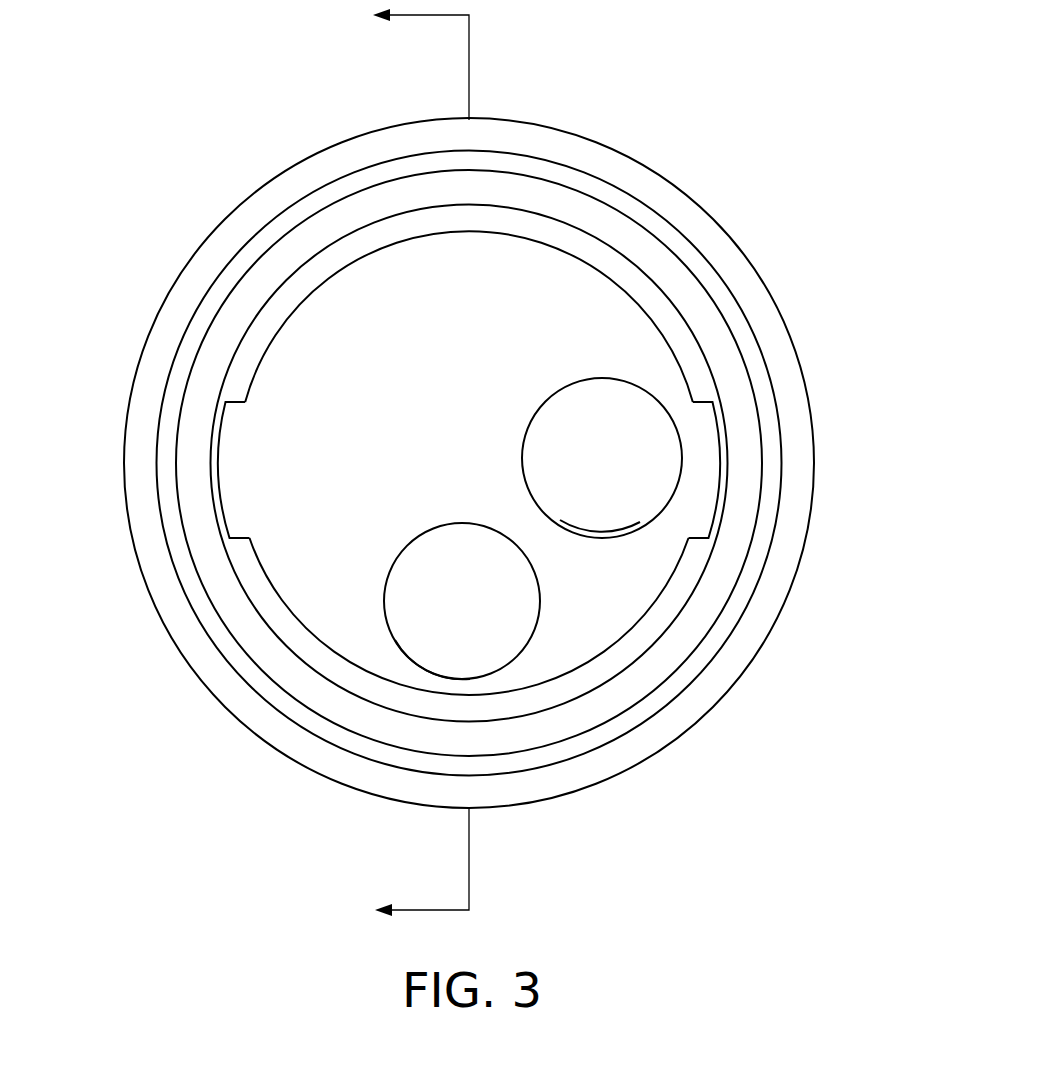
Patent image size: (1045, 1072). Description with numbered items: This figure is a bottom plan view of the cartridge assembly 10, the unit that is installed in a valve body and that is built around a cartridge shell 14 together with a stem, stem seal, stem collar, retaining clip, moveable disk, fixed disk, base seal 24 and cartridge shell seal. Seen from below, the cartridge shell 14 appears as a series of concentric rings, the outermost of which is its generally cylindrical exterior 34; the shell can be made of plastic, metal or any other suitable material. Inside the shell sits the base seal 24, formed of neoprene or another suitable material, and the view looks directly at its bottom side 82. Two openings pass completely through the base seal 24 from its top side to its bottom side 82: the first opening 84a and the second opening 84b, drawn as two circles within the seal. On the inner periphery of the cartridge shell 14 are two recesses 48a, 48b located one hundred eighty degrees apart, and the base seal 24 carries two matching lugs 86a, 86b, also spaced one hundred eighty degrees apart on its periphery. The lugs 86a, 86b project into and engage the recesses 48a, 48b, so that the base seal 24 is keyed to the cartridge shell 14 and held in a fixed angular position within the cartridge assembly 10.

The cartridge assembly 10 is at (193, 169).
The cartridge shell 14 is at (662, 172).
The base seal 24 is at (633, 293).
The exterior 34 is at (828, 405).
The bottom side 82 is at (382, 340).
The recess 48a is at (718, 493).
The recess 48b is at (217, 438).
The lug 86a is at (703, 435).
The lug 86b is at (232, 485).
The first opening 84a is at (615, 537).
The second opening 84b is at (427, 677).